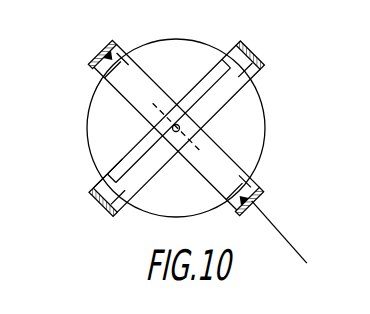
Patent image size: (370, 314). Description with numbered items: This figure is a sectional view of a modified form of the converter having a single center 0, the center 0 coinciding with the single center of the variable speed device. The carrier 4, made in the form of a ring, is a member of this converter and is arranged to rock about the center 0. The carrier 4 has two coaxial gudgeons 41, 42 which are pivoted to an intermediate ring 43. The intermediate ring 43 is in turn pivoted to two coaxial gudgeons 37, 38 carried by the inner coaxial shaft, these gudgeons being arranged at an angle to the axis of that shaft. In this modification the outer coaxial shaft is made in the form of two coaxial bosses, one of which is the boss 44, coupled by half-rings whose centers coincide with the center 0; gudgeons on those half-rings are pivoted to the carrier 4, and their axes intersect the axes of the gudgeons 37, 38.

The carrier 4 is at (104, 40).
The coaxial boss 44 is at (252, 46).
The intermediate ring 43 is at (263, 101).
The gudgeon 37 is at (197, 100).
The gudgeon 38 is at (142, 158).
The gudgeon 42 is at (105, 80).
The gudgeon 41 is at (243, 163).
The center 0 is at (176, 137).